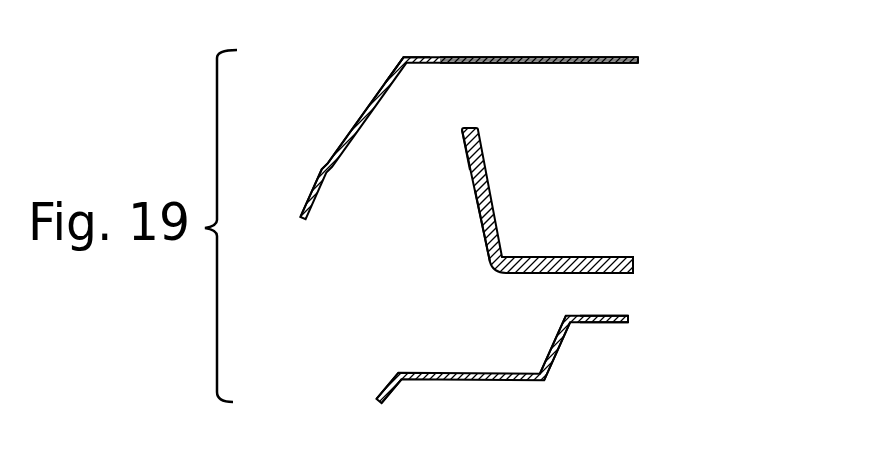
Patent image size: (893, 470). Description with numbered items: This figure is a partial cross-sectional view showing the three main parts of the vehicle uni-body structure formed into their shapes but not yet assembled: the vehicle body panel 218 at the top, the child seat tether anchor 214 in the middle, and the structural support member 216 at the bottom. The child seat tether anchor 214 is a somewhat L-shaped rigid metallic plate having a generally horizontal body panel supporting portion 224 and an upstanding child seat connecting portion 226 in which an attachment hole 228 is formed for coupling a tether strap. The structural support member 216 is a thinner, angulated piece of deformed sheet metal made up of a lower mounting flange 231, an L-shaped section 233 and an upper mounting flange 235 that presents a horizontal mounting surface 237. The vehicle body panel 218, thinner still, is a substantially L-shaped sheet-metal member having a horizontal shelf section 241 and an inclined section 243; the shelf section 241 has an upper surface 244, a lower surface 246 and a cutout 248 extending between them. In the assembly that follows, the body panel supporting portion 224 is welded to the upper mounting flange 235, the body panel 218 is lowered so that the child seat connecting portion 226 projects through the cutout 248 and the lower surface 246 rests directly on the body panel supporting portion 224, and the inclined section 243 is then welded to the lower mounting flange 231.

The child seat tether anchor 214 is at (535, 207).
The structural support member 216 is at (593, 355).
The vehicle body panel 218 is at (648, 60).
The body panel supporting portion 224 is at (573, 257).
The child seat connecting portion 226 is at (476, 200).
The attachment hole 228 is at (470, 170).
The lower mounting flange 231 is at (390, 390).
The L-shaped section 233 is at (545, 380).
The upper mounting flange 235 is at (612, 323).
The horizontal mounting surface 237 is at (612, 317).
The horizontal shelf section 241 is at (545, 64).
The inclined section 243 is at (368, 109).
The upper surface 244 is at (498, 57).
The lower surface 246 is at (498, 63).
The cutout 248 is at (453, 57).